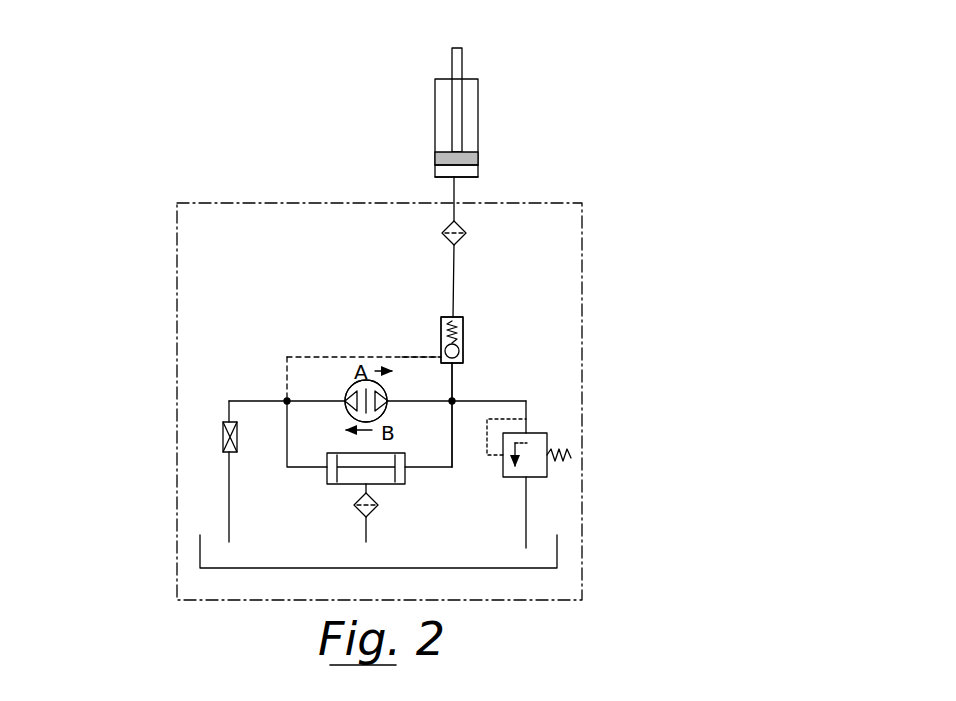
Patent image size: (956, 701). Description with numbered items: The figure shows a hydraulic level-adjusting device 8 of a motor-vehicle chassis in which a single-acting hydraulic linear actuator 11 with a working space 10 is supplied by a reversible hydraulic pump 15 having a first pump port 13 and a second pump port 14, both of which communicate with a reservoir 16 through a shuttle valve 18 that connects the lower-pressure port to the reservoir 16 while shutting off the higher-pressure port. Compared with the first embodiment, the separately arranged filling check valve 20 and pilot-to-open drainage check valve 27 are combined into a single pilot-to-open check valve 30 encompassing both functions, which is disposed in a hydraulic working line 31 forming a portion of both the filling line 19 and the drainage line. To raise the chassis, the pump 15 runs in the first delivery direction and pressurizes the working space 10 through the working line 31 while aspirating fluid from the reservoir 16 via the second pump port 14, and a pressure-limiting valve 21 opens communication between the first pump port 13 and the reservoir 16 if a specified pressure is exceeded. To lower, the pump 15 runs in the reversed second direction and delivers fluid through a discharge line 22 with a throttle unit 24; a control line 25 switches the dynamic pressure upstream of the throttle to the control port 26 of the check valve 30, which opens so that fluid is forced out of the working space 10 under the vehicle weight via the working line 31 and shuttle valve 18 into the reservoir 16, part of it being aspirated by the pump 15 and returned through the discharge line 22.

The hydraulic level-adjusting device 8 is at (622, 186).
The working space 10 is at (468, 173).
The hydraulic linear actuator 11 is at (478, 122).
The first pump port 13 is at (388, 402).
The second pump port 14 is at (343, 400).
The hydraulic pump 15 is at (352, 385).
The reservoir 16 is at (211, 568).
The shuttle valve 18 is at (338, 485).
The filling line 19 is at (467, 387).
The filling check valve 20 is at (469, 318).
The pilot-to-open drainage check valve 27 is at (452, 340).
The pressure-limiting valve 21 is at (550, 431).
The discharge line 22 is at (229, 398).
The throttle unit 24 is at (213, 433).
The control line 25 is at (402, 357).
The control port 26 is at (440, 355).
The pilot-to-open check valve 30 is at (462, 343).
The hydraulic working line 31 is at (456, 372).